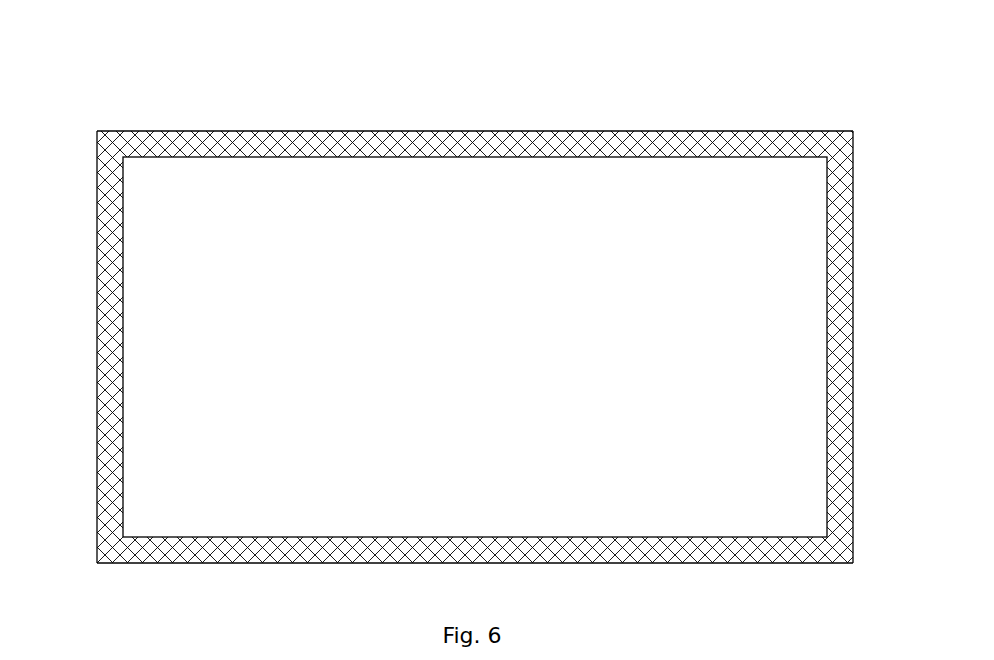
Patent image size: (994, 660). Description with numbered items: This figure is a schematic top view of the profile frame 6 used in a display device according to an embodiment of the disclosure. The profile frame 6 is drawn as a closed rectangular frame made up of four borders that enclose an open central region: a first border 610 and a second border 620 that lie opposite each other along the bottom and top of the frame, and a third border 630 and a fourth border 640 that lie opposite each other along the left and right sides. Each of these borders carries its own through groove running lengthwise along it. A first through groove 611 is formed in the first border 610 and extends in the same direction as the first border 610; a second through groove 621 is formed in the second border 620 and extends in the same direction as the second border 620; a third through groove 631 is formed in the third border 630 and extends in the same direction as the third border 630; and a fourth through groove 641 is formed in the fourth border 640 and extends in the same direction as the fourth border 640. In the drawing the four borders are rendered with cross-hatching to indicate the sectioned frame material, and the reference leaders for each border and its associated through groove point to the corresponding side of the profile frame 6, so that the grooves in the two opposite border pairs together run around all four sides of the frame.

The profile frame 6 is at (484, 92).
The first border 610 is at (583, 564).
The first through groove 611 is at (633, 564).
The second border 620 is at (645, 130).
The second through groove 621 is at (737, 130).
The third border 630 is at (96, 383).
The third through groove 631 is at (96, 330).
The fourth border 640 is at (854, 355).
The fourth through groove 641 is at (854, 295).